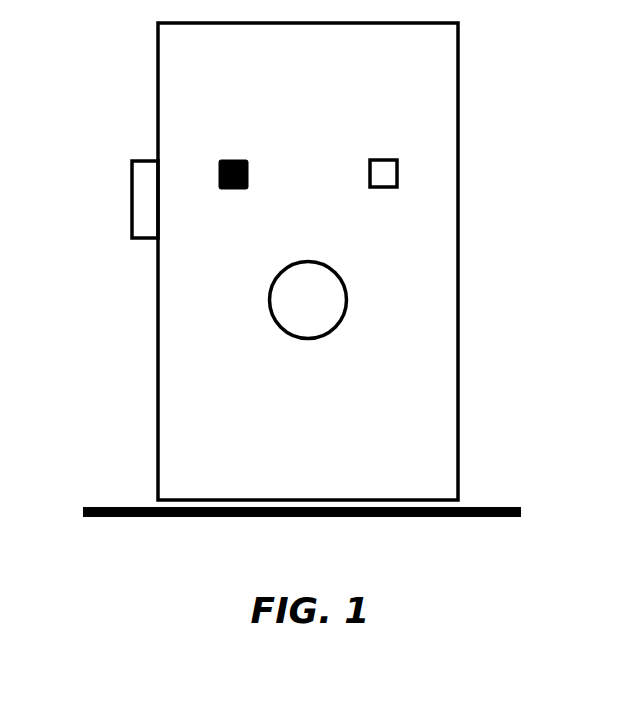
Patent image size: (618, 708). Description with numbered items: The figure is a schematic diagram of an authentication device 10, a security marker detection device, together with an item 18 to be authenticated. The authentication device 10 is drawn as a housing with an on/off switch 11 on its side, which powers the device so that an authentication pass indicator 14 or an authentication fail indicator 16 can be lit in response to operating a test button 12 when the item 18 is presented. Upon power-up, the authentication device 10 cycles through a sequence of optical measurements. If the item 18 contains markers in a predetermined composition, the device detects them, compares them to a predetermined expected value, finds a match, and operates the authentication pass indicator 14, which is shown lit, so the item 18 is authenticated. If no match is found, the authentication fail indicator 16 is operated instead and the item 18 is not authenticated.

The authentication device 10 is at (459, 65).
The on/off switch 11 is at (131, 200).
The test button 12 is at (281, 329).
The authentication pass indicator 14 is at (232, 160).
The authentication fail indicator 16 is at (382, 160).
The item 18 is at (522, 510).